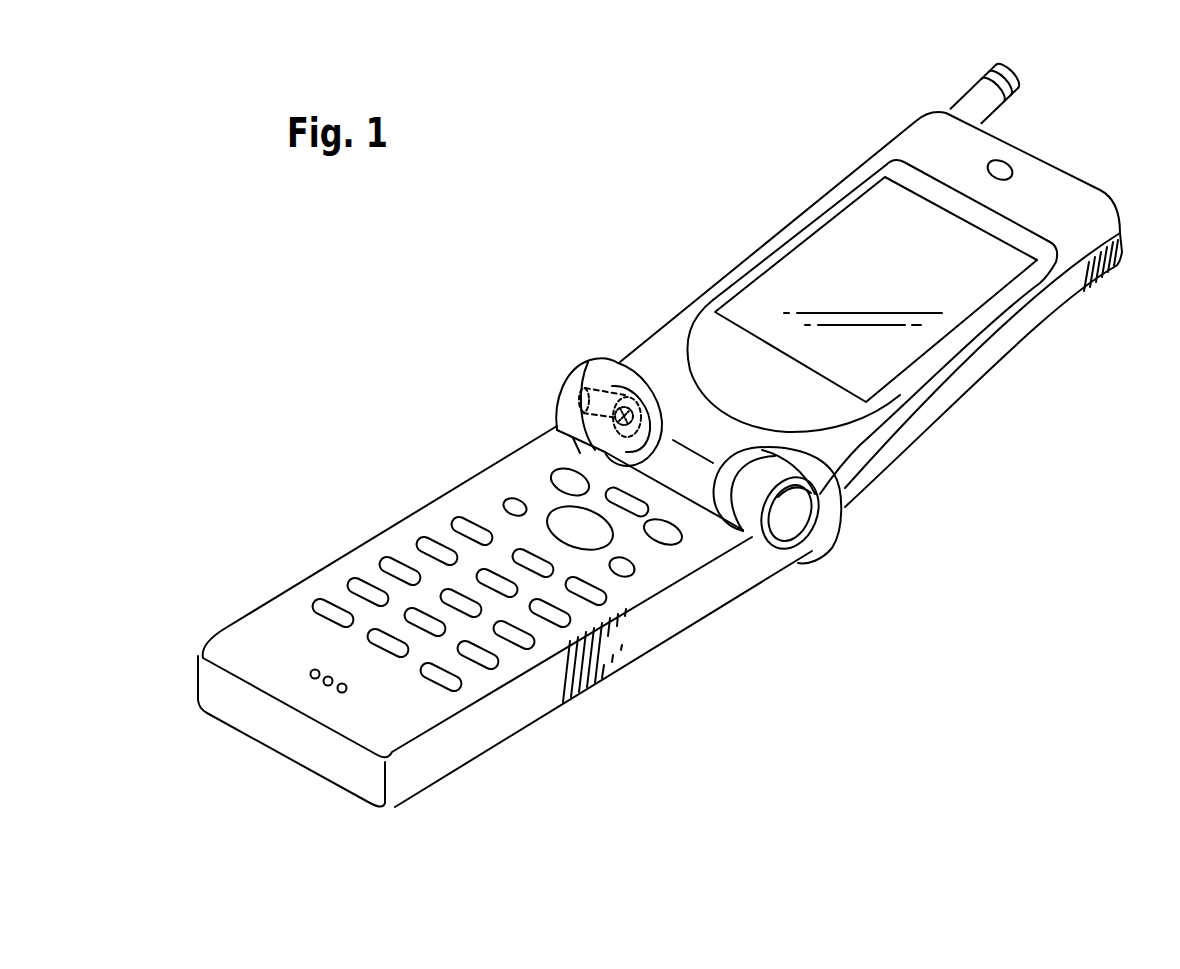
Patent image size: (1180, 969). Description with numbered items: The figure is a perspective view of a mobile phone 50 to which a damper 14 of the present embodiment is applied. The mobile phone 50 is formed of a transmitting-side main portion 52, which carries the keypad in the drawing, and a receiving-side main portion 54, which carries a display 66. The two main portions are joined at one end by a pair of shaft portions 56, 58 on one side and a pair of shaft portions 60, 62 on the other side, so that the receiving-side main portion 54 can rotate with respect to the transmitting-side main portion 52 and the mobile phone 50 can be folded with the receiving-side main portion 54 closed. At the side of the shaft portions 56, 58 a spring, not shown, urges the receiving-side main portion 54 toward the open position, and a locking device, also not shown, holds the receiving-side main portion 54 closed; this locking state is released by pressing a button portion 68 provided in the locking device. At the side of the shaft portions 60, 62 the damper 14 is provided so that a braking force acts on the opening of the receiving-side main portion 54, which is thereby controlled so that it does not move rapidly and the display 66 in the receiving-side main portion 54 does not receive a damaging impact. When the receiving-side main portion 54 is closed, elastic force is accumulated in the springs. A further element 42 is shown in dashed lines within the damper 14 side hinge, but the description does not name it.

The damper 14 is at (595, 379).
The sensor 42 is at (640, 423).
The mobile phone 50 is at (1086, 156).
The transmitting-side main portion 52 is at (621, 600).
The receiving-side main portion 54 is at (953, 367).
The shaft portion 56 is at (862, 473).
The shaft portion 58 is at (828, 496).
The shaft portion 60 is at (578, 378).
The shaft portion 62 is at (645, 377).
The display 66 is at (985, 292).
The button portion 68 is at (793, 523).